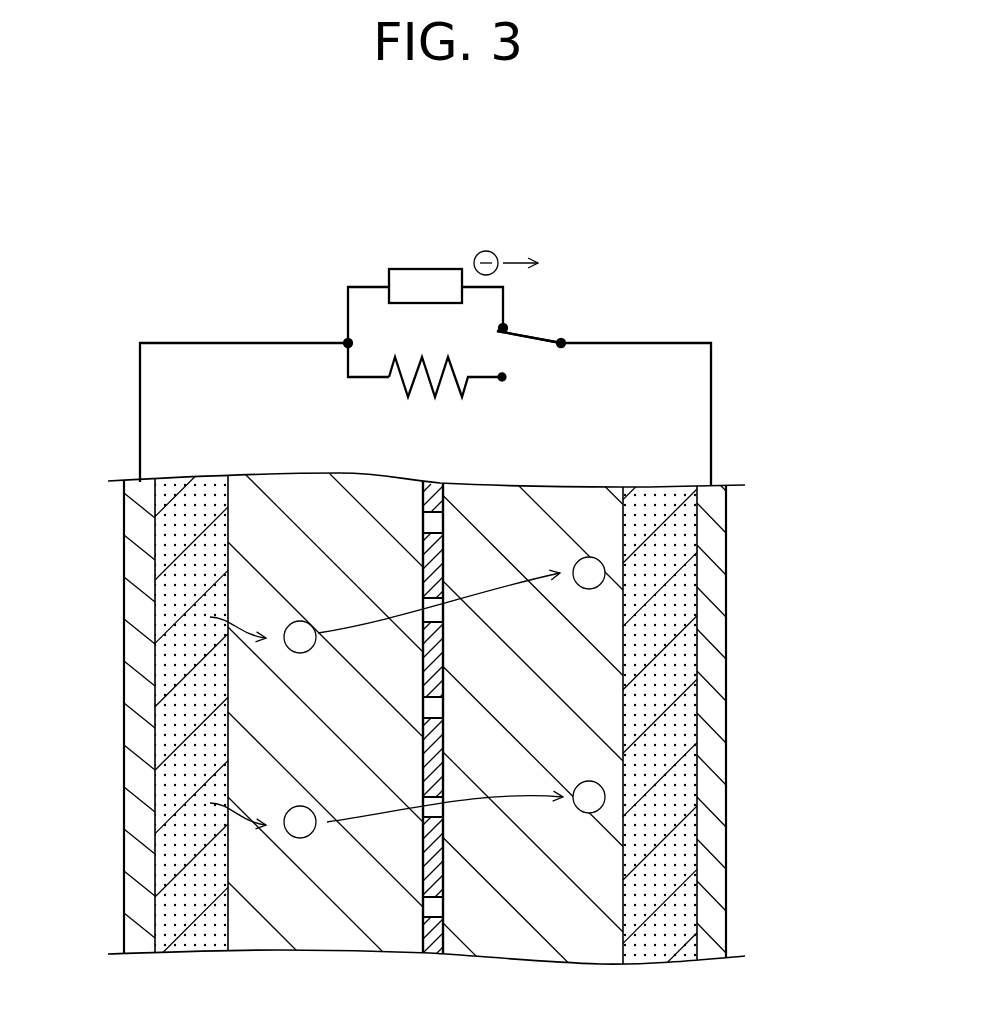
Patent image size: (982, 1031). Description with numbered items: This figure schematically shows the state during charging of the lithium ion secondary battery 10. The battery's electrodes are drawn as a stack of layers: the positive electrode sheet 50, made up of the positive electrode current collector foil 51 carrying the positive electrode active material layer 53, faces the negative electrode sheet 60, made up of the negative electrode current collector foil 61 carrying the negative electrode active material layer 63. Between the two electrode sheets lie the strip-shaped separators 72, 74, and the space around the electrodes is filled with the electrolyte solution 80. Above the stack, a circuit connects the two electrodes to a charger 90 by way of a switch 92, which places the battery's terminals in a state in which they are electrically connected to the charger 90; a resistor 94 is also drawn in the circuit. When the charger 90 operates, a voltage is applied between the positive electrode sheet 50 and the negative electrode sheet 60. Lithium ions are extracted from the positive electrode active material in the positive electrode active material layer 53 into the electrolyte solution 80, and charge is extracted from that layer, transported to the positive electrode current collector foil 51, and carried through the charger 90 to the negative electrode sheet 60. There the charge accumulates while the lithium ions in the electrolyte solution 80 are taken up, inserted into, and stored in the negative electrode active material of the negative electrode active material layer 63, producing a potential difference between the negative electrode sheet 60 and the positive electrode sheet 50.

The lithium ion secondary battery 10 is at (681, 255).
The positive electrode sheet 50 is at (117, 476).
The positive electrode current collector foil 51 is at (125, 612).
The positive electrode active material layer 53 is at (193, 484).
The negative electrode sheet 60 is at (721, 474).
The negative electrode current collector foil 61 is at (726, 628).
The negative electrode active material layer 63 is at (655, 485).
The separator 72 is at (496, 743).
The separator 74 is at (442, 936).
The electrolyte solution 80 is at (366, 893).
The charger 90 is at (450, 268).
The switch 92 is at (546, 321).
The resistor 94 is at (427, 393).